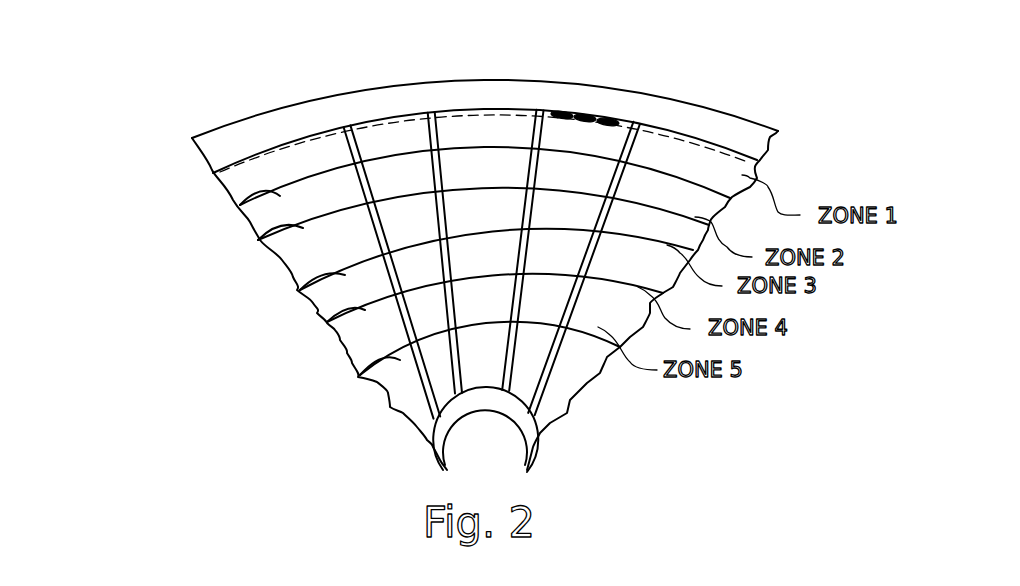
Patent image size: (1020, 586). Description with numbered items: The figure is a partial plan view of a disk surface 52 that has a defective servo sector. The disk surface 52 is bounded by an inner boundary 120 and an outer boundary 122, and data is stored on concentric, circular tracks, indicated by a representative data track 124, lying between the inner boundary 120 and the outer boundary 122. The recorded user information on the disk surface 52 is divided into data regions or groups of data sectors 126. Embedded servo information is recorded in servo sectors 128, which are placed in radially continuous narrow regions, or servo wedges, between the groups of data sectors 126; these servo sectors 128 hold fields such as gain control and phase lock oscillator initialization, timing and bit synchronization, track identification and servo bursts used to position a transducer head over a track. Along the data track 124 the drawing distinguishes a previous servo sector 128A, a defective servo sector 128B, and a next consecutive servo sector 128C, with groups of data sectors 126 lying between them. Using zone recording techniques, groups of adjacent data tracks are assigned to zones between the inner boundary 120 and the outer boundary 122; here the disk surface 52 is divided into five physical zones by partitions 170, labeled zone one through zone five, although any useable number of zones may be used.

The disk surface 52 is at (165, 101).
The inner boundary 120 is at (386, 385).
The outer boundary 122 is at (526, 107).
The data track 124 is at (490, 113).
The data sectors 126 is at (588, 113).
The servo sectors 128 is at (647, 122).
The previous servo sector 128A is at (345, 118).
The defective servo sector 128B is at (438, 110).
The next consecutive servo sector 128C is at (545, 109).
The partitions 170 is at (277, 190).